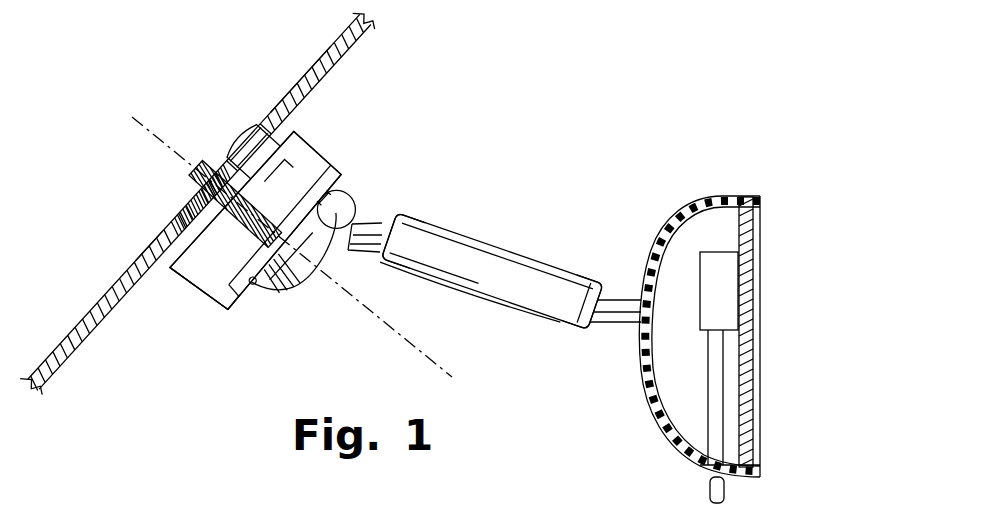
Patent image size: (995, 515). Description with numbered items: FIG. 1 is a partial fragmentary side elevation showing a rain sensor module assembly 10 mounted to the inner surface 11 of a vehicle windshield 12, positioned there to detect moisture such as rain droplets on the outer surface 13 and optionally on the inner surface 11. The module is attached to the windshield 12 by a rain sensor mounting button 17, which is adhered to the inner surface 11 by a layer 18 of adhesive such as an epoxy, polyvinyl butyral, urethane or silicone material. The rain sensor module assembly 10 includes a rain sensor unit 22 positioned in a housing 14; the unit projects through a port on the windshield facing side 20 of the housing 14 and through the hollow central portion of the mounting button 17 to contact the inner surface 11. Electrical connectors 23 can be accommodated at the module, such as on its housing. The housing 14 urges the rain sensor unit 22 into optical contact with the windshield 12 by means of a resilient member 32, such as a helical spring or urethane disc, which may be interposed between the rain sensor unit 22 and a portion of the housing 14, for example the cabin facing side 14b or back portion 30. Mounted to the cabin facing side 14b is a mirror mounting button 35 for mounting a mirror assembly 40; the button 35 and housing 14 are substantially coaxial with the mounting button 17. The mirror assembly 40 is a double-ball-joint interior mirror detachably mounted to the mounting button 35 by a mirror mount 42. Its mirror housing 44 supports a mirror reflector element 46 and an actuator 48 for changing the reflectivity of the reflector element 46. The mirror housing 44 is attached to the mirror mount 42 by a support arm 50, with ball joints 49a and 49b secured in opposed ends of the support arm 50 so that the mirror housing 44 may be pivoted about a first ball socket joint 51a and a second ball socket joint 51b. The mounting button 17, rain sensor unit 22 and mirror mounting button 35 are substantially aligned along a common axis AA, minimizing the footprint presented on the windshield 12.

The rain sensor module assembly 10 is at (188, 302).
The inner surface 11 is at (347, 60).
The windshield 12 is at (312, 68).
The outer surface 13 is at (283, 97).
The housing 14 is at (300, 158).
The cabin facing side 14b is at (337, 190).
The rain sensor mounting button 17 is at (234, 148).
The layer of adhesive 18 is at (144, 249).
The windshield facing side 20 is at (243, 160).
The rain sensor unit 22 is at (183, 287).
The electrical connectors 23 is at (305, 148).
The back portion 30 is at (340, 186).
The resilient member 32 is at (235, 258).
The mirror mounting button 35 is at (254, 290).
The mirror assembly 40 is at (606, 214).
The mirror mount 42 is at (308, 281).
The mirror housing 44 is at (672, 208).
The mirror reflector element 46 is at (748, 285).
The actuator 48 is at (720, 262).
The ball joint 49a is at (370, 259).
The ball joint 49b is at (597, 336).
The support arm 50 is at (507, 243).
The first ball socket joint 51a is at (386, 206).
The second ball socket joint 51b is at (621, 345).
The common axis AA is at (435, 360).